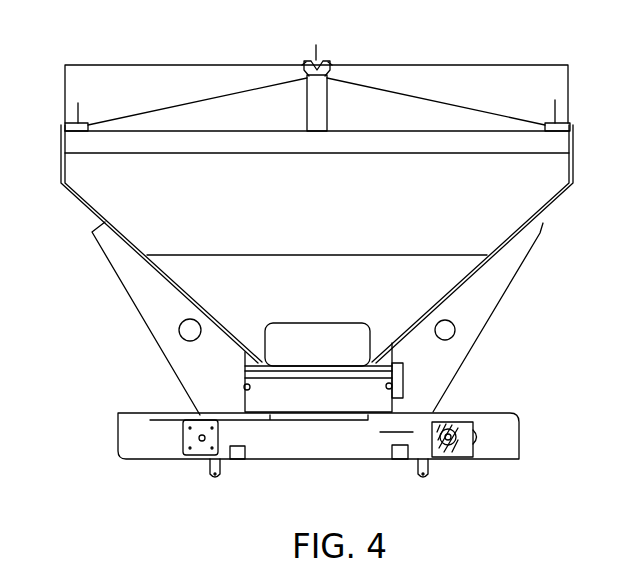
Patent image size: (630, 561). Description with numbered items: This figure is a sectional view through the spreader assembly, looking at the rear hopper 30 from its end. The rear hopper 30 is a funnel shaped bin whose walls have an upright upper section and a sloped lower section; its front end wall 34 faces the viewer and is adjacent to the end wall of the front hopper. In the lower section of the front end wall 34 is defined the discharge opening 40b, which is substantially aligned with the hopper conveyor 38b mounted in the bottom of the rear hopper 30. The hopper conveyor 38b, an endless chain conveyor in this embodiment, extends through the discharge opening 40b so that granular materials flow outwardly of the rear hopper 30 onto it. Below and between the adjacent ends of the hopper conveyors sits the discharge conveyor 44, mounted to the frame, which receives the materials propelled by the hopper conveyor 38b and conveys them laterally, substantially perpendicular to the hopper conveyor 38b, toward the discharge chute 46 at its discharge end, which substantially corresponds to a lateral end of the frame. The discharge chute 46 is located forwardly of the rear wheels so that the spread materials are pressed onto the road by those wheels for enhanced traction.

The rear hopper 30 is at (493, 207).
The front end wall 34 is at (330, 218).
The hopper conveyor 38b is at (340, 373).
The discharge opening 40b is at (330, 343).
The discharge conveyor 44 is at (490, 415).
The discharge chute 46 is at (118, 456).